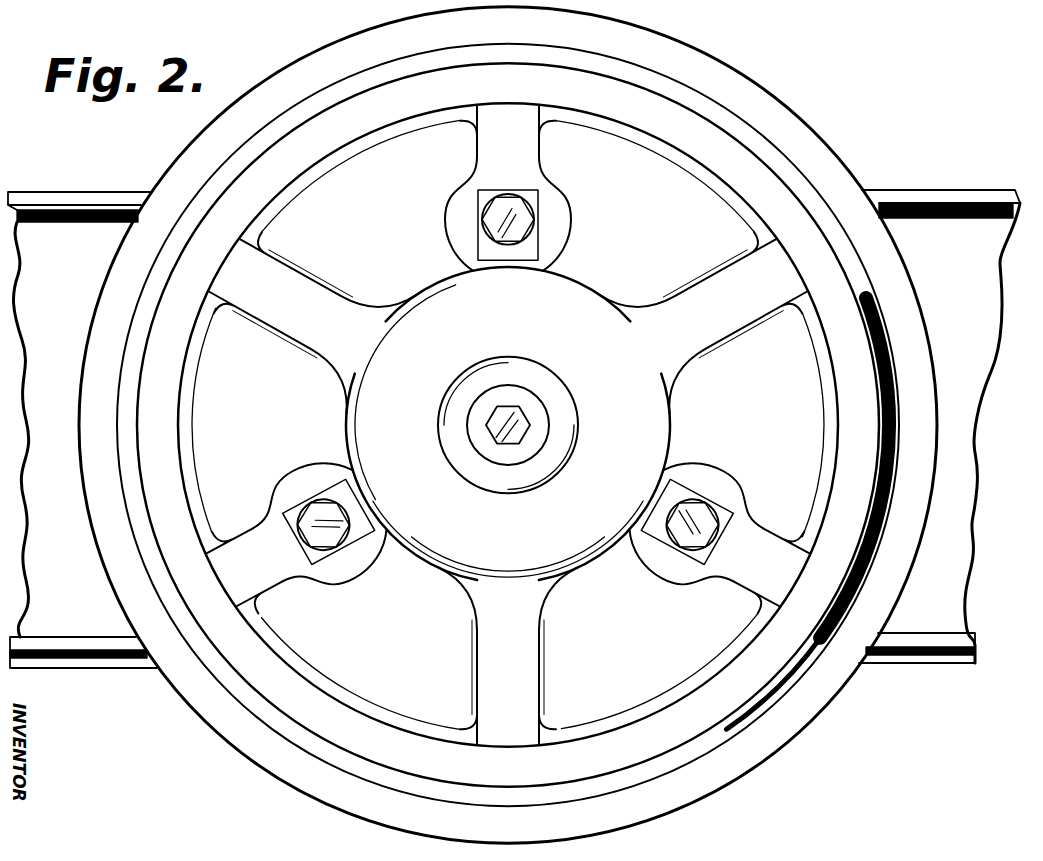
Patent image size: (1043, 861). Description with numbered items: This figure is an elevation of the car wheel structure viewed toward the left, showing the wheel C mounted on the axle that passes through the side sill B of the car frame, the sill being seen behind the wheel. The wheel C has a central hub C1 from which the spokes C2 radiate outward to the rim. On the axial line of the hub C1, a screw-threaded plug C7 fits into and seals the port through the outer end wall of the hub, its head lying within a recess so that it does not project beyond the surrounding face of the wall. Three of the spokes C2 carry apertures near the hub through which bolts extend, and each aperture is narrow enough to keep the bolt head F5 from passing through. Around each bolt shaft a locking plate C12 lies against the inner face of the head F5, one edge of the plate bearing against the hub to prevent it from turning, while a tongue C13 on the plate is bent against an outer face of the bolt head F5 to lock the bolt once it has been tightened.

The side sill B is at (72, 233).
The wheel C is at (850, 332).
The hub C1 is at (458, 548).
The spokes C2 is at (558, 227).
The plug C7 is at (535, 425).
The locking plate C12 is at (537, 252).
The tongue C13 is at (523, 189).
The head F5 is at (490, 222).